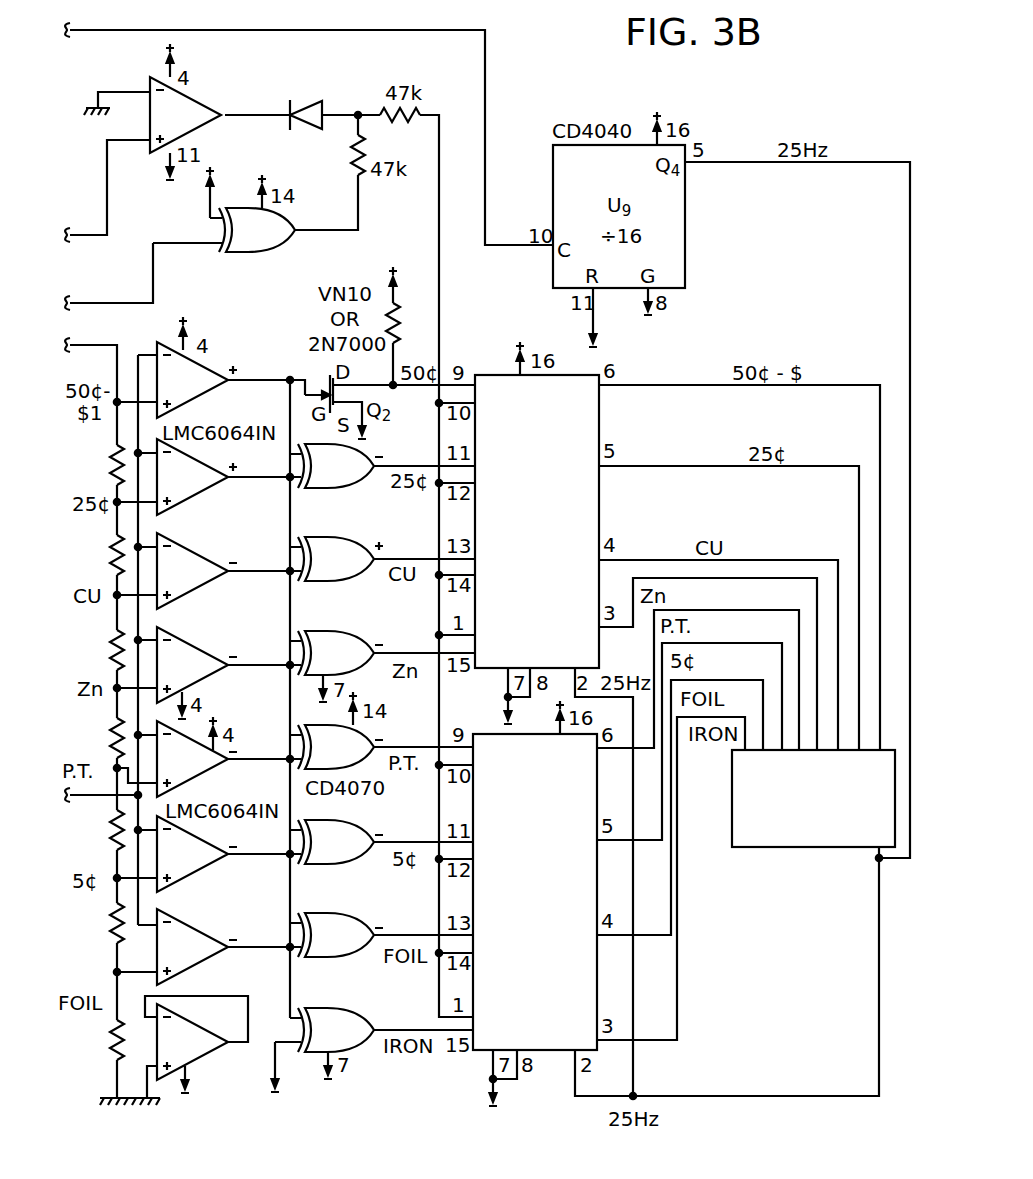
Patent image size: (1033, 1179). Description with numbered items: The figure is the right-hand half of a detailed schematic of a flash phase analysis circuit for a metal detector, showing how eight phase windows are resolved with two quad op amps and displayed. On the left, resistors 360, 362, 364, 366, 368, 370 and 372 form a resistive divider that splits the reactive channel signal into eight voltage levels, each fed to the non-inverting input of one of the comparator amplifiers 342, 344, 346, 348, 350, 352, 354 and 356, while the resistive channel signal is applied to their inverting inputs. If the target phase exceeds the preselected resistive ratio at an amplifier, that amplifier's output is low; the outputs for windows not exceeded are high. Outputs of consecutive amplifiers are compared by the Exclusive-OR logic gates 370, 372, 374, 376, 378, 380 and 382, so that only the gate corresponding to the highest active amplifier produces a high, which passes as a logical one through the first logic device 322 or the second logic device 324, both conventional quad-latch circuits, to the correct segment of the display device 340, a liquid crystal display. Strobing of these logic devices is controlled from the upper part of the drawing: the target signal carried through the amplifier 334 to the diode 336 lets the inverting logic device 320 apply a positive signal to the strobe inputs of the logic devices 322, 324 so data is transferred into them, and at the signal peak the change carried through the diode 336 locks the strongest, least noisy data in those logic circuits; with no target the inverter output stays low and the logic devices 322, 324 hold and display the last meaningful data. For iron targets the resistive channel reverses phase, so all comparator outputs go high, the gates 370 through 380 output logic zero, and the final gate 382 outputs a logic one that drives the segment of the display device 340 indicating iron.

The logic device U5A 320 is at (277, 257).
The logic device U7 322 is at (537, 492).
The logic device U8 324 is at (505, 913).
The amplifier U1D 334 is at (209, 116).
The diode D4 336 is at (313, 102).
The display device 340 is at (813, 829).
The amplifier U3A 342 is at (220, 378).
The amplifier U3B 344 is at (208, 490).
The amplifier U3C 346 is at (212, 577).
The amplifier U3D 348 is at (212, 663).
The amplifier U4A 350 is at (217, 759).
The amplifier U4B 352 is at (213, 859).
The amplifier U4C 354 is at (215, 946).
The amplifier U4D 356 is at (196, 1061).
The resistor 360 is at (76, 457).
The resistor 362 is at (76, 546).
The resistor 364 is at (76, 639).
The resistor 366 is at (76, 726).
The resistor 368 is at (76, 839).
The logic gate U5B 370 is at (228, 695).
The logic gate U5C 372 is at (218, 797).
The logic gate U5D 374 is at (353, 642).
The logic gate U6A 376 is at (364, 729).
The logic gate U6B 378 is at (355, 830).
The logic gate U6C 380 is at (349, 924).
The logic gate U6D 382 is at (349, 1020).